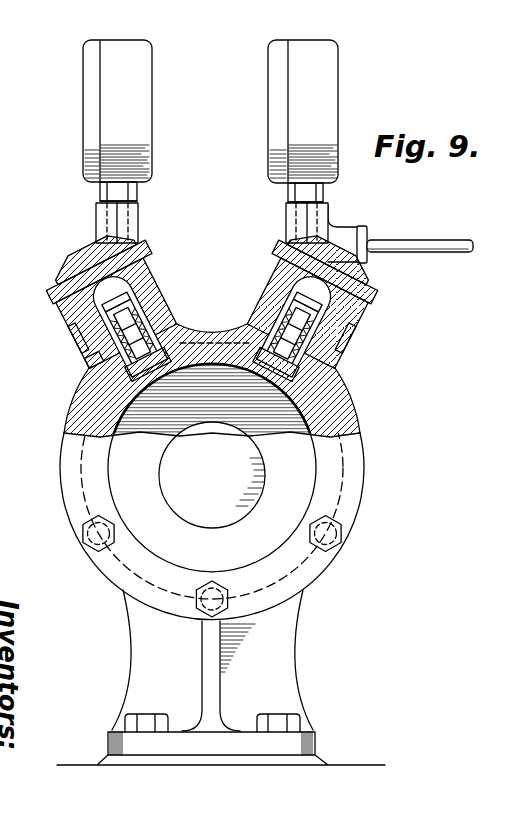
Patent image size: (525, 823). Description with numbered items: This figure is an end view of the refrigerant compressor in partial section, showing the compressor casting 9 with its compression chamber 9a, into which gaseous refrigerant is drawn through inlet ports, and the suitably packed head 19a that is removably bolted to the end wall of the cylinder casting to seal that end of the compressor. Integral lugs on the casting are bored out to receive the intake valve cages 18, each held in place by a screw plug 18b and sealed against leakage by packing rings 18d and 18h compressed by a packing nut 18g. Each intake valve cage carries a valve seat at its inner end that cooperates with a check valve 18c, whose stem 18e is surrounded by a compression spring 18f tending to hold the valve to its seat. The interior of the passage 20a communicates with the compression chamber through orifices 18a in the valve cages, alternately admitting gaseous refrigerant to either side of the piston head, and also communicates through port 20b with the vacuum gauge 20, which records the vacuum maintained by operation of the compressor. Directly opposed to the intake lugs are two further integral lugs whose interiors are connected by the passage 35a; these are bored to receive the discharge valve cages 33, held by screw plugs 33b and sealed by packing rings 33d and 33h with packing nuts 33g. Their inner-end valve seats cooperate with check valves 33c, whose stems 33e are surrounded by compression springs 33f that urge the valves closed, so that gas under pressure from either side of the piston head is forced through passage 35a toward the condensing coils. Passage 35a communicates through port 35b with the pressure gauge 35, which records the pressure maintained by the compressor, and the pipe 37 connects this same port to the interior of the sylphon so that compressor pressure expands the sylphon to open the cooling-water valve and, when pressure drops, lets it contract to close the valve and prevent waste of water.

The compressor casting 9 is at (357, 432).
The compression chamber 9a is at (219, 421).
The packed head 19a is at (345, 505).
The vacuum gauge 20 is at (113, 109).
The passage 20a is at (140, 272).
The port 20b is at (141, 225).
The valve cage 18 is at (155, 305).
The orifices 18a is at (150, 290).
The screw plug 18b is at (68, 261).
The check valve 18c is at (150, 375).
The packing ring 18d is at (165, 318).
The valve stem 18e is at (95, 374).
The compression spring 18f is at (80, 350).
The packing nut 18g is at (52, 292).
The packing ring 18h is at (64, 322).
The pressure gauge 35 is at (305, 108).
The passage 35a is at (354, 275).
The port 35b is at (284, 225).
The valve cage 33 is at (305, 363).
The screw plug 33b is at (338, 242).
The check valve 33c is at (262, 372).
The packing ring 33d is at (300, 378).
The valve stem 33e is at (320, 343).
The compression spring 33f is at (268, 330).
The packing nut 33g is at (370, 289).
The packing ring 33h is at (362, 307).
The pipe 37 is at (437, 242).